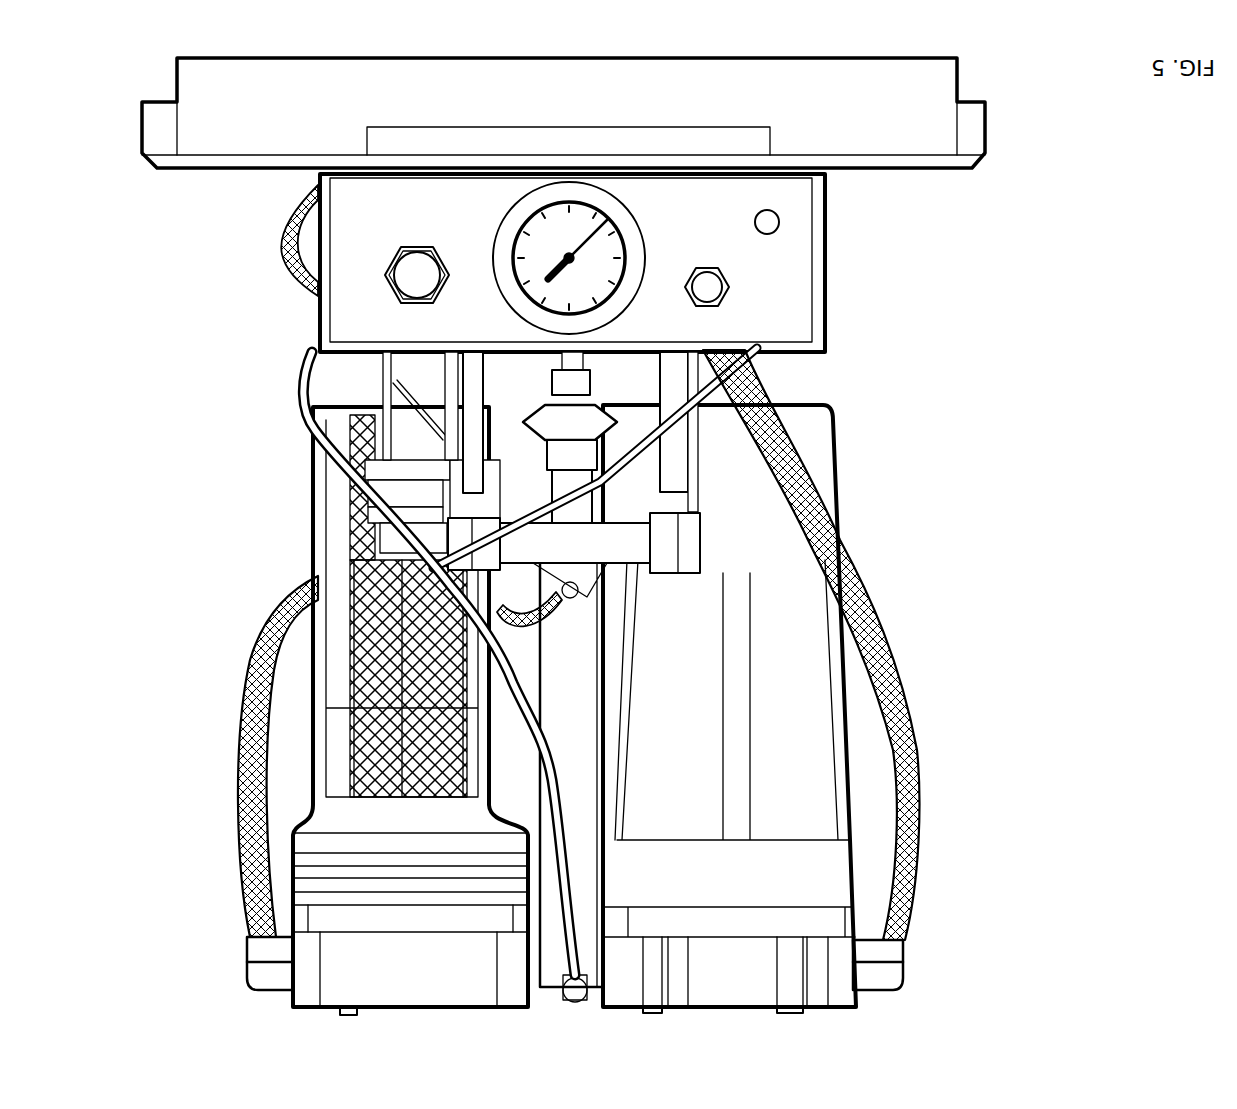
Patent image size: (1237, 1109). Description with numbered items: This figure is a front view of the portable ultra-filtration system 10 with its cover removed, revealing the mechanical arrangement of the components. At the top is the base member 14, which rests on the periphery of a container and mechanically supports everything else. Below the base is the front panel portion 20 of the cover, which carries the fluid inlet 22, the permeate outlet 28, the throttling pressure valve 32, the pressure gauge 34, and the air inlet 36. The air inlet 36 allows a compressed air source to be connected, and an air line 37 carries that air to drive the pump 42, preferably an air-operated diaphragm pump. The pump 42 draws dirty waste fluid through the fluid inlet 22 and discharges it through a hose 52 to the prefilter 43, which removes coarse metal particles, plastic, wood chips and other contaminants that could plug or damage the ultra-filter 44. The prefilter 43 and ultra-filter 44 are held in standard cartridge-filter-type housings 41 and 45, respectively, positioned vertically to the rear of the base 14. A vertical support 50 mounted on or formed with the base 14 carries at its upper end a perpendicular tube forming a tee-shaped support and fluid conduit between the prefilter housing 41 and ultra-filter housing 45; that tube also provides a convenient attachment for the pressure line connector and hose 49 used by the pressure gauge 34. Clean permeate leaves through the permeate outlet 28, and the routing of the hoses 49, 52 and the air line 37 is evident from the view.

The portable ultra-filtration system 10 is at (976, 929).
The base member 14 is at (157, 123).
The front panel portion 20 is at (428, 192).
The fluid inlet 22 is at (397, 252).
The permeate outlet 28 is at (727, 279).
The throttling pressure valve 32 is at (527, 403).
The pressure gauge 34 is at (517, 297).
The air inlet 36 is at (773, 214).
The air line 37 is at (760, 363).
The prefilter housing 41 is at (405, 948).
The pump 42 is at (574, 543).
The prefilter 43 is at (298, 792).
The ultra-filter 44 is at (858, 798).
The ultra-filter housing 45 is at (722, 948).
The hose 49 is at (306, 376).
The vertical support 50 is at (558, 661).
The hose 52 is at (268, 647).